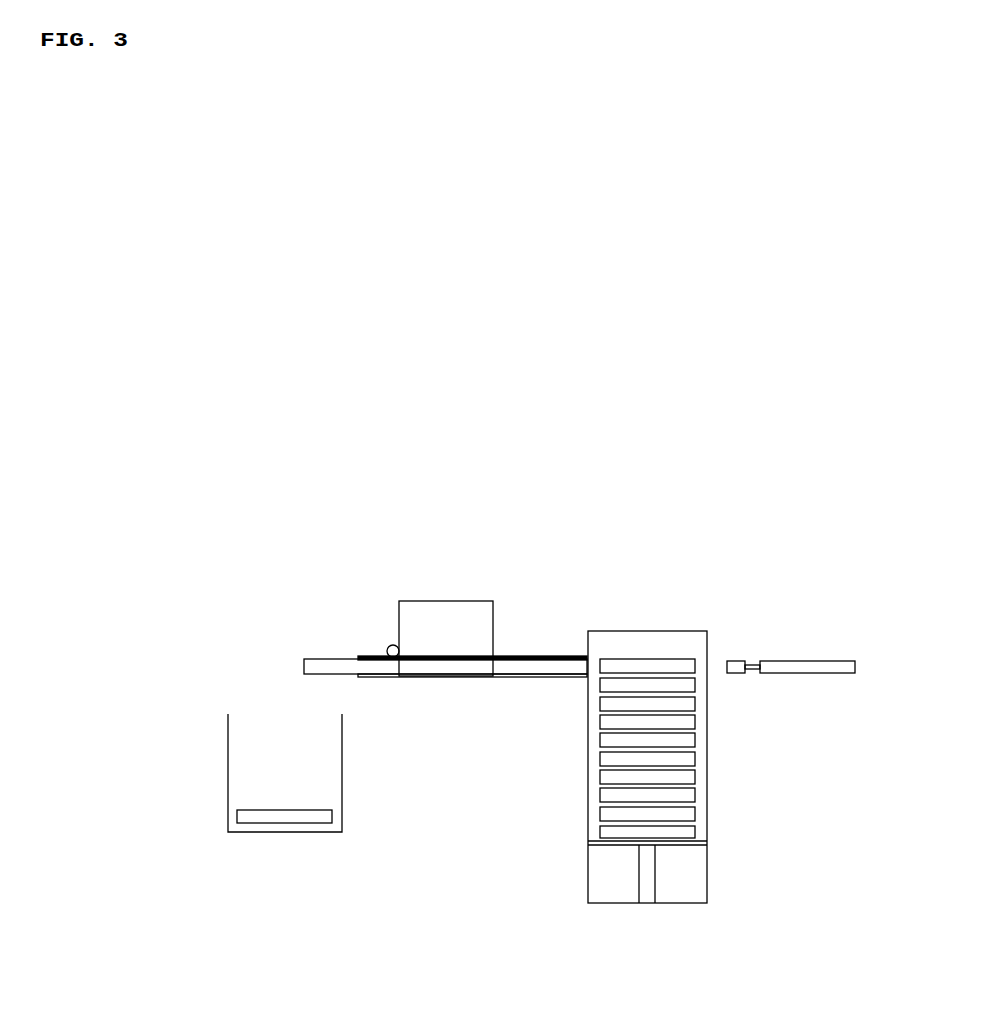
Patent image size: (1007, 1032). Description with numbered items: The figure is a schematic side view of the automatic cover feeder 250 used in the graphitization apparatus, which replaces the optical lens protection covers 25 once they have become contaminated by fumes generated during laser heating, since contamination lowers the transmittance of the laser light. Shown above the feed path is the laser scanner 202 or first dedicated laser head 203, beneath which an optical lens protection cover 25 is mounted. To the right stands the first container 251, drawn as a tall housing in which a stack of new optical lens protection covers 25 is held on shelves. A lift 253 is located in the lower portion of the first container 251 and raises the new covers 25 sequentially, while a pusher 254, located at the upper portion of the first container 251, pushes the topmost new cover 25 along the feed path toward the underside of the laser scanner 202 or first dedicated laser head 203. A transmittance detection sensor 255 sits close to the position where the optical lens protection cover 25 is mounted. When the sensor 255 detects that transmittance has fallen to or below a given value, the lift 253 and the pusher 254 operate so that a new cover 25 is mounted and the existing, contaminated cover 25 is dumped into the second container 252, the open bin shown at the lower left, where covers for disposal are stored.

The automatic cover feeder 250 is at (190, 312).
The optical lens protection cover 25 is at (350, 668).
The transmittance detection sensor 255 is at (389, 646).
The laser scanner 202 is at (511, 608).
The first dedicated laser head 203 is at (494, 640).
The first container 251 is at (708, 797).
The lift 253 is at (656, 875).
The pusher 254 is at (812, 657).
The second container 252 is at (284, 838).